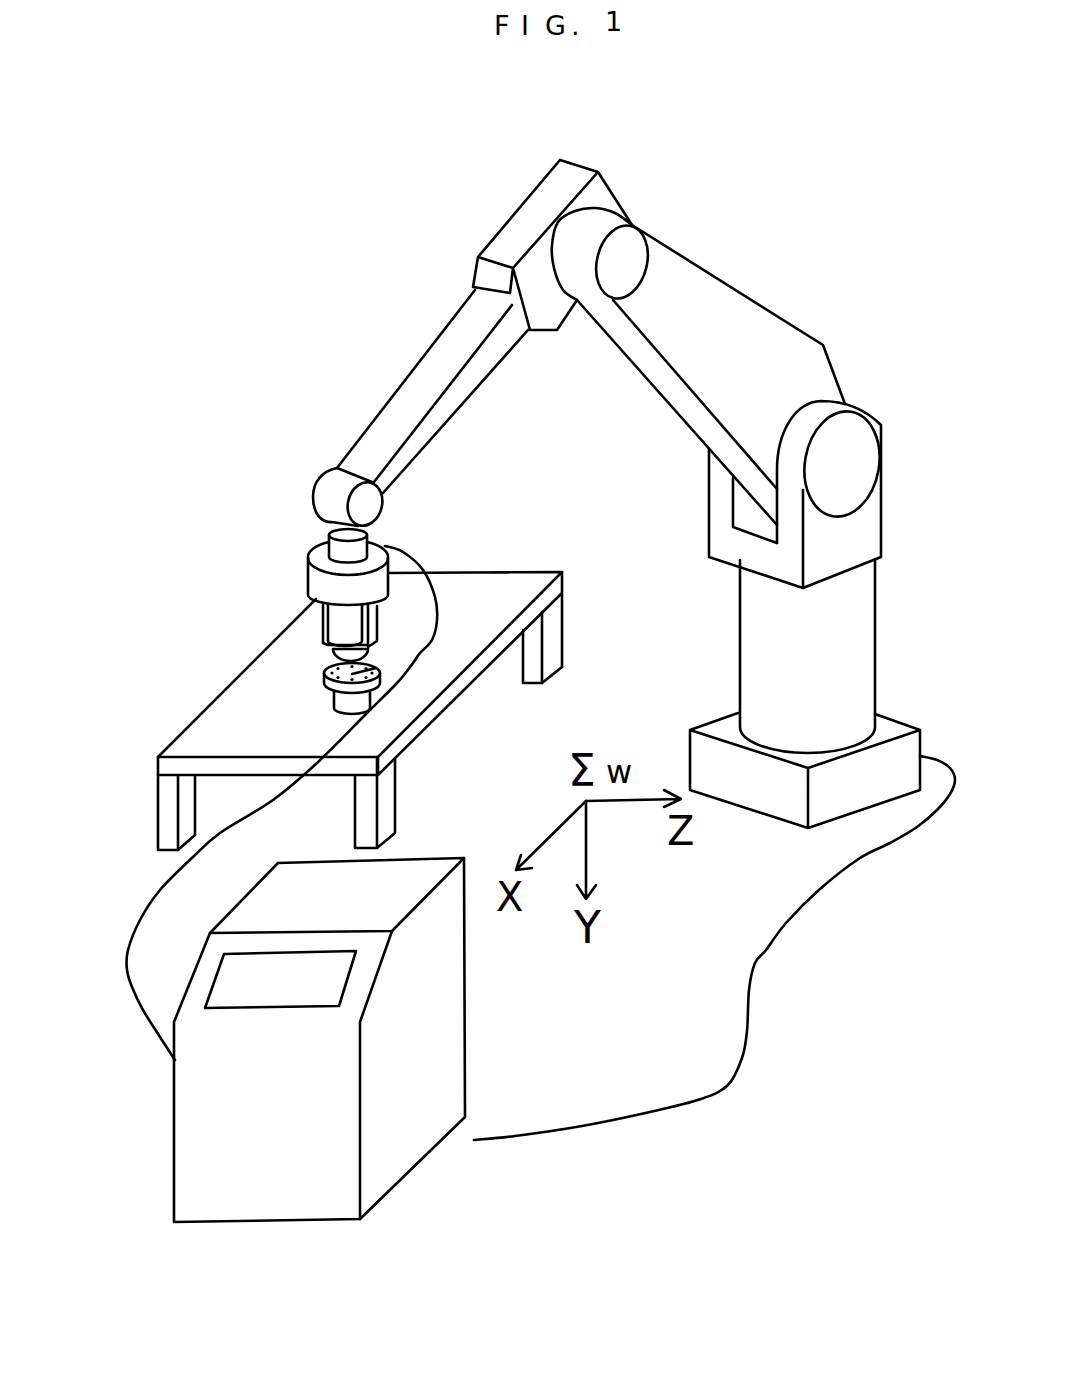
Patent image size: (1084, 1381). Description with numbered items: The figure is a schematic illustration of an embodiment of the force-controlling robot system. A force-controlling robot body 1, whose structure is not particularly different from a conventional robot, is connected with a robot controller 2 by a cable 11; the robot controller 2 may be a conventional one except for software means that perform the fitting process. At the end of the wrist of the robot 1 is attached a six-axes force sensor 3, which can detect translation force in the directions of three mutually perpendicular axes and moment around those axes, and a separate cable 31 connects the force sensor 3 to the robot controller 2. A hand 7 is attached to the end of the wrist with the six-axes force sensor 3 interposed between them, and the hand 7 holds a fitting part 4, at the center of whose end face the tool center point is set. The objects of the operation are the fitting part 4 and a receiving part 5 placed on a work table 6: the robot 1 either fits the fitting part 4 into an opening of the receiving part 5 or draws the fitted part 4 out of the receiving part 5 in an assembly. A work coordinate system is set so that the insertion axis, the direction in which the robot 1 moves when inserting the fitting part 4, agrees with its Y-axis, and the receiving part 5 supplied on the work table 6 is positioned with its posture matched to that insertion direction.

The force-controlling robot body 1 is at (855, 375).
The robot controller 2 is at (392, 1207).
The six-axes force sensor 3 is at (316, 528).
The fitting part 4 is at (318, 642).
The receiving part 5 is at (309, 680).
The work table 6 is at (228, 728).
The hand 7 is at (390, 579).
The cable 11 is at (766, 957).
The cable 31 is at (126, 985).